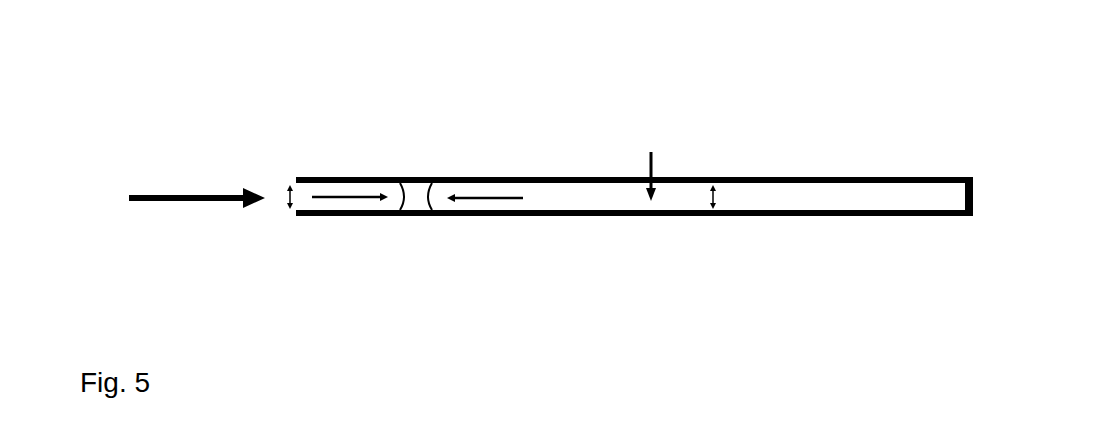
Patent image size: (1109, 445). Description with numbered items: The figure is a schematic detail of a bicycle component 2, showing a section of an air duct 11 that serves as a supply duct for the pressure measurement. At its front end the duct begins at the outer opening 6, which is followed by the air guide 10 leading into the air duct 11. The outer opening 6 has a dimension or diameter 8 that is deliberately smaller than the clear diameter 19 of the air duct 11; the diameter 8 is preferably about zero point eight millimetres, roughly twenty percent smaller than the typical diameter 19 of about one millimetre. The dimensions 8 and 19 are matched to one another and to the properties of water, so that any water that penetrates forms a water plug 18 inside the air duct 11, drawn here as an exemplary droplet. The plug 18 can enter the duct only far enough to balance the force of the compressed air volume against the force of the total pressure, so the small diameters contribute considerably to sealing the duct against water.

The bicycle component 2 is at (340, 74).
The outer opening 6 is at (303, 197).
The diameter of the outer opening 8 is at (287, 193).
The air guide 10 is at (650, 160).
The air duct 11 is at (530, 197).
The water plug 18 is at (416, 192).
The diameter of the air duct 19 is at (717, 197).